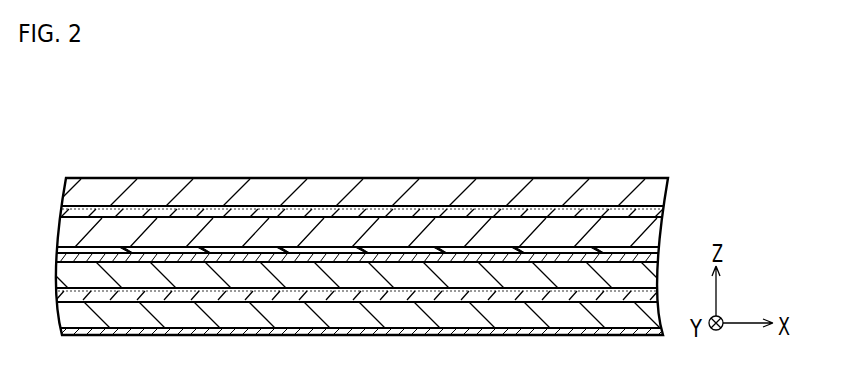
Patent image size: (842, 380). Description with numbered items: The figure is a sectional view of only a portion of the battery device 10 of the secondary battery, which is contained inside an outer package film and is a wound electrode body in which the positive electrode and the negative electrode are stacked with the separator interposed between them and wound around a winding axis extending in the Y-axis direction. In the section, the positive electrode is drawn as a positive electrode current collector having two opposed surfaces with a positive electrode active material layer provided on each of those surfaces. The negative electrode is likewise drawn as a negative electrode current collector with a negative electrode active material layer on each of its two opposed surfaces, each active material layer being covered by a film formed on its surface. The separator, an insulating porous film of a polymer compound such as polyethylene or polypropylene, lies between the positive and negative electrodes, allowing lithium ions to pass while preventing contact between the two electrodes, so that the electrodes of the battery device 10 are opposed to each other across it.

The battery device 10 is at (688, 137).